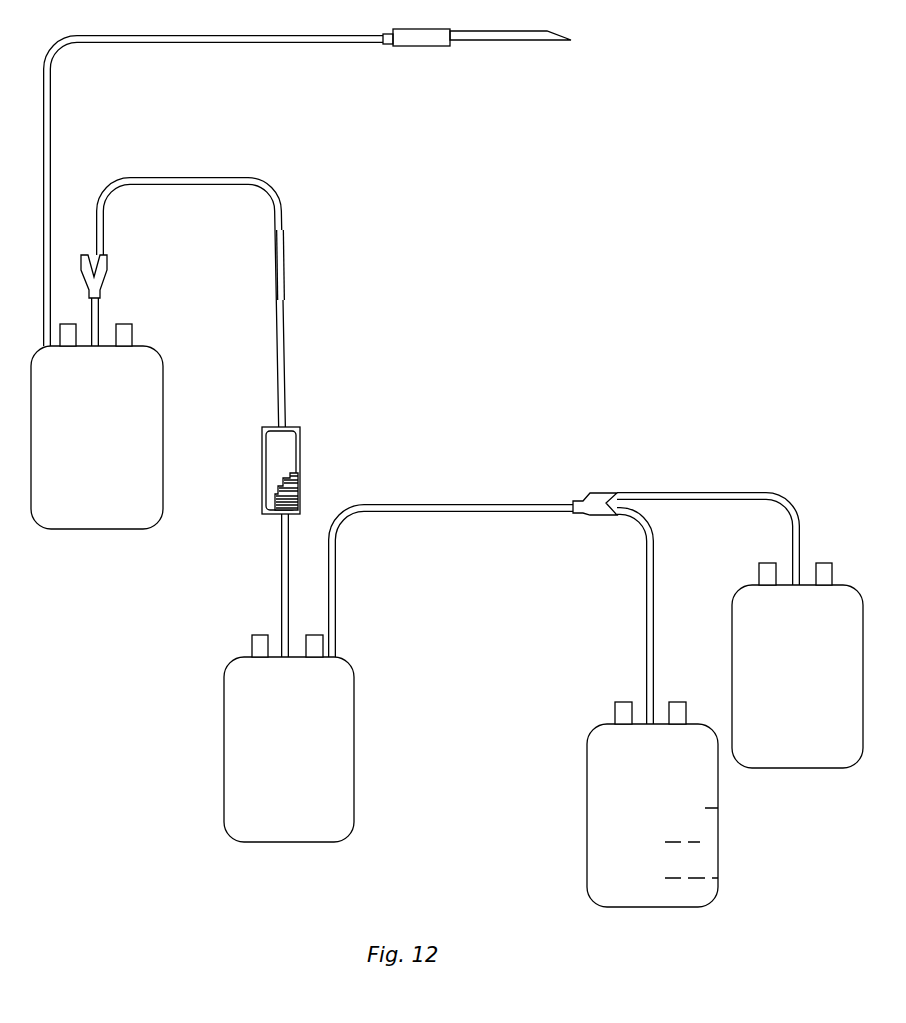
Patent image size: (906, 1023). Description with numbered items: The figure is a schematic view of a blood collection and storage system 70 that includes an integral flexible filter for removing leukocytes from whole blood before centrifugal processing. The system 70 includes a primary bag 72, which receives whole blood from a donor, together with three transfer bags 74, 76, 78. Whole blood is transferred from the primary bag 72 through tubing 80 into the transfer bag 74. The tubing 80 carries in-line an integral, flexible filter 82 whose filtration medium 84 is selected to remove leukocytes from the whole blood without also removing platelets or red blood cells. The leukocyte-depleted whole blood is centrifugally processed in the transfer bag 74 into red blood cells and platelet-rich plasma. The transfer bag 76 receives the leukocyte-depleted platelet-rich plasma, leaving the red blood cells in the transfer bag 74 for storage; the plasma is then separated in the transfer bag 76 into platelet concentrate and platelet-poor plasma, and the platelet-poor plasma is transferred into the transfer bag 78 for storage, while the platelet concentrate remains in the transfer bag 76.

The system 70 is at (494, 306).
The primary bag 72 is at (133, 382).
The transfer bag 74 is at (338, 733).
The transfer bag 76 is at (752, 625).
The transfer bag 78 is at (688, 840).
The tubing 80 is at (283, 320).
The filter 82 is at (277, 466).
The filtration medium 84 is at (303, 497).